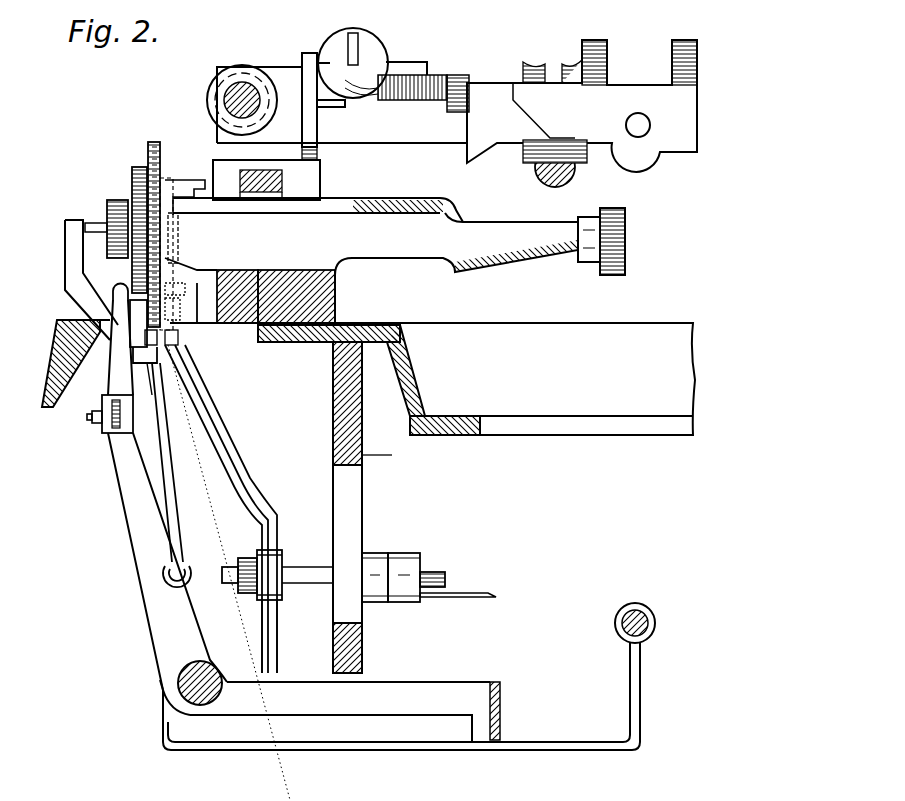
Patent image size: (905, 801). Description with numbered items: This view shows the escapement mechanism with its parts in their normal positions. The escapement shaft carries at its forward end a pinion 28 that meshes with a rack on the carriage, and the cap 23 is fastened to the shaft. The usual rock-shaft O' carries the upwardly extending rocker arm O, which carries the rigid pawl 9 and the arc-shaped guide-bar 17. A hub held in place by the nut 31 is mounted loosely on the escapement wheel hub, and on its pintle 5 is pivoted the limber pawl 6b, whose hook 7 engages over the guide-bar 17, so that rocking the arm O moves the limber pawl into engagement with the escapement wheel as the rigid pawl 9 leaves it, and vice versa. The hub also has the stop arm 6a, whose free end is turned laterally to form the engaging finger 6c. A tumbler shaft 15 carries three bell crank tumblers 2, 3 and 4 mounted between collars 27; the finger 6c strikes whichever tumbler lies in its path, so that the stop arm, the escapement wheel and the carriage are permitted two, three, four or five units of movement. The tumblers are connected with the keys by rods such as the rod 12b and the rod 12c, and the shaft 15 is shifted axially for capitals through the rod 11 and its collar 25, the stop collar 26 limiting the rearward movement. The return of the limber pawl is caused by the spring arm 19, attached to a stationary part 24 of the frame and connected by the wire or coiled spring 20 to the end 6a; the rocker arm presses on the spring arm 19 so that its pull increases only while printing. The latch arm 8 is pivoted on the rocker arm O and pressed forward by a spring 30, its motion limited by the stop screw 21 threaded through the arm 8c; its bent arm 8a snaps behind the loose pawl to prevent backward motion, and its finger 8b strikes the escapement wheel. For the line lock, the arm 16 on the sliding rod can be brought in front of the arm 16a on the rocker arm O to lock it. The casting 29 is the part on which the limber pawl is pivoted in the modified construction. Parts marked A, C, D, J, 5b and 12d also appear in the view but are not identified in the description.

The frame bracket A is at (55, 332).
The shaft C is at (576, 172).
The shaft D is at (230, 100).
The plate J is at (289, 68).
The rocker arm O is at (138, 651).
The rock-shaft O' is at (378, 683).
The tumbler 2 is at (210, 385).
The tumbler 3 is at (196, 357).
The tumbler 4 is at (202, 373).
The pintle 5 is at (172, 262).
The block extension 5b is at (170, 292).
The stop arm 6a is at (175, 206).
The limber pawl 6b is at (143, 325).
The engaging finger 6c is at (181, 178).
The hook 7 is at (148, 152).
The latch arm 8 is at (150, 480).
The latch arm extension 8a is at (147, 364).
The finger 8b is at (116, 297).
The arm 8c is at (102, 406).
The rigid pawl 9 is at (130, 318).
The rod 11 is at (490, 593).
The rod 12b is at (262, 652).
The rod 12c is at (279, 636).
The plate 12d is at (345, 712).
The tumbler shaft 15 is at (237, 568).
The arm 16 is at (100, 222).
The arm 16a is at (70, 239).
The guide-bar 17 is at (170, 307).
The spring arm 19 is at (163, 735).
The coiled spring 20 is at (180, 667).
The stop screw 21 is at (87, 422).
The cap 23 is at (132, 178).
The stationary part 24 is at (656, 623).
The collar 25 is at (404, 553).
The stop collar 26 is at (372, 553).
The collars 27 is at (262, 552).
The pinion 28 is at (627, 231).
The casting 29 is at (362, 252).
The spring 30 is at (160, 578).
The nut 31 is at (175, 228).